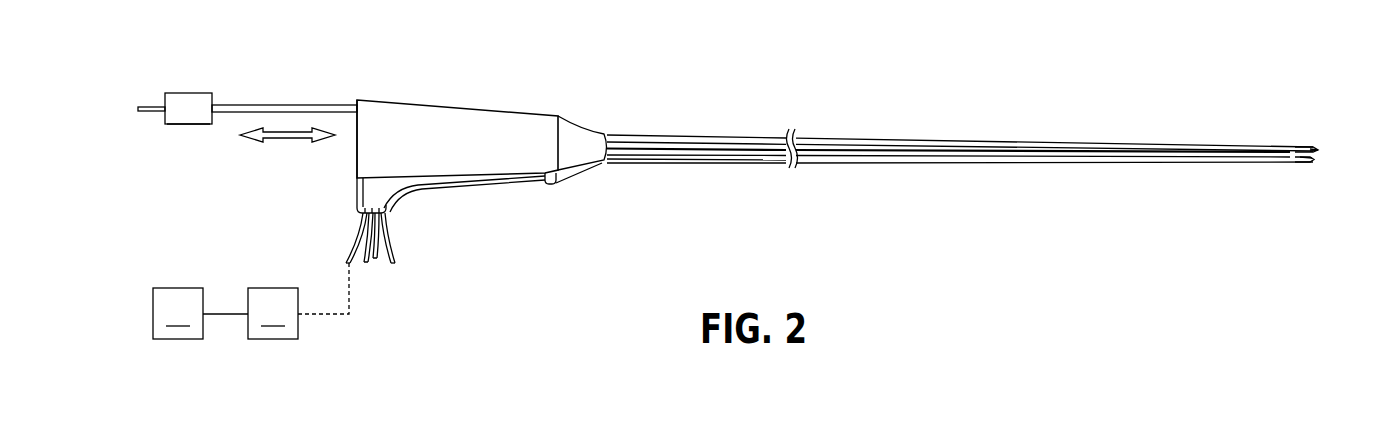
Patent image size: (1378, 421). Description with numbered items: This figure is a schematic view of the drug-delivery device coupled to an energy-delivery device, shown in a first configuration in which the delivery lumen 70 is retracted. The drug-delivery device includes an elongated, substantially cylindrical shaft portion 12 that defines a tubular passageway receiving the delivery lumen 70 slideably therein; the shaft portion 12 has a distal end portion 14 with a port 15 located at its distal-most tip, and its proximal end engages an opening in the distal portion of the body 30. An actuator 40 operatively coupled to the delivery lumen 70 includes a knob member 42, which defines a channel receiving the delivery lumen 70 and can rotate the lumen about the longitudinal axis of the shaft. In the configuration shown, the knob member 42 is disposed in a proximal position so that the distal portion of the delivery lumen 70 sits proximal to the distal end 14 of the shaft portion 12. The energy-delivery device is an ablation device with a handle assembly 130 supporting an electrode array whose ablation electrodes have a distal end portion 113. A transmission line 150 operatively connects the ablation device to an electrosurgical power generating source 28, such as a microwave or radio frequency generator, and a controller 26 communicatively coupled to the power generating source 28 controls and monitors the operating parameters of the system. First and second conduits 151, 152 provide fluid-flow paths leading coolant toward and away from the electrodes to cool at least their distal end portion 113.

The shaft portion 12 is at (618, 135).
The distal end portion 14 is at (1312, 158).
The port 15 is at (1326, 150).
The controller 26 is at (178, 313).
The electrosurgical power generating source 28 is at (273, 313).
The body 30 is at (507, 99).
The actuator 40 is at (190, 74).
The knob member 42 is at (188, 125).
The delivery lumen 70 is at (153, 105).
The distal end portion of the ablation electrodes 113 is at (1296, 147).
The handle assembly 130 is at (518, 195).
The transmission line 150 is at (358, 245).
The first conduit 151 is at (385, 245).
The second conduit 152 is at (373, 262).